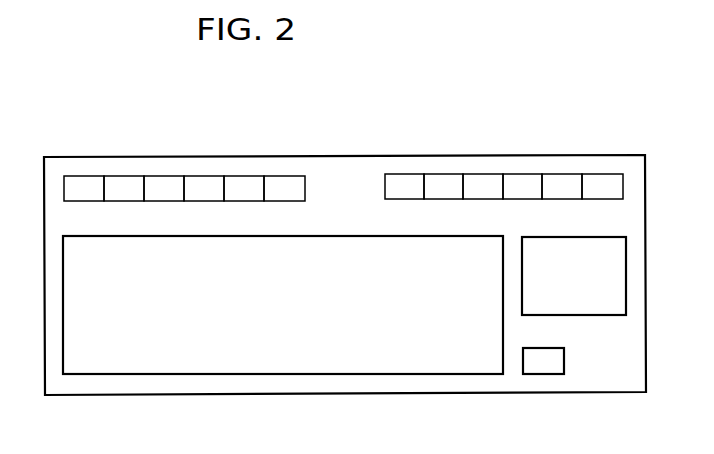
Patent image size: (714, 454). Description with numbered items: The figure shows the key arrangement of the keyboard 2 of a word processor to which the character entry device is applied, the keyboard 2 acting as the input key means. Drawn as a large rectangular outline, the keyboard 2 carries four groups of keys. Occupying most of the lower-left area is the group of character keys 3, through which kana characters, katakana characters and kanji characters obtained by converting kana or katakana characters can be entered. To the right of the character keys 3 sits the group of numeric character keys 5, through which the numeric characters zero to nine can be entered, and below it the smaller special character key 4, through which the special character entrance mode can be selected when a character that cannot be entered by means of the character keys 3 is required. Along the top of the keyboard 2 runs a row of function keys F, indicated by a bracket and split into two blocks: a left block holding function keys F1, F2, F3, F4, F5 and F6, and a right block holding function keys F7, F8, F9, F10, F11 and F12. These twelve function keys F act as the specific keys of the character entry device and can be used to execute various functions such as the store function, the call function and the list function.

The keyboard 2 is at (568, 97).
The character keys 3 is at (438, 366).
The special character key 4 is at (545, 368).
The numeric character keys 5 is at (590, 309).
The function keys F is at (650, 127).
The function key F1 is at (98, 180).
The function key F2 is at (138, 180).
The function key F3 is at (178, 180).
The function key F4 is at (218, 180).
The function key F5 is at (258, 180).
The function key F6 is at (300, 180).
The function key F7 is at (420, 178).
The function key F8 is at (459, 178).
The function key F9 is at (498, 178).
The function key F10 is at (536, 178).
The function key F11 is at (577, 178).
The function key F12 is at (617, 178).